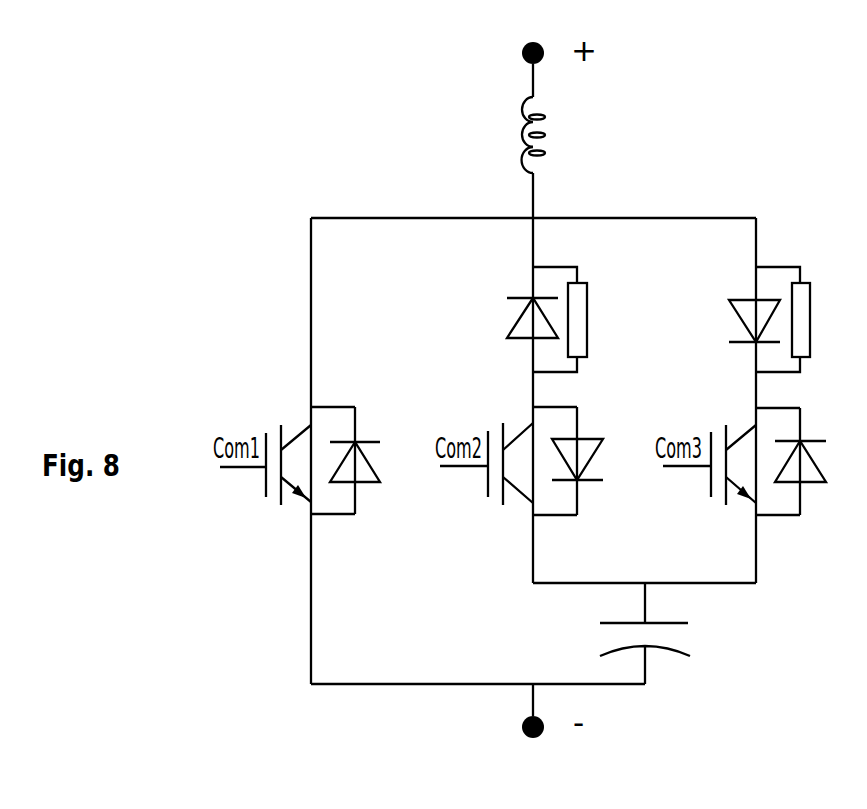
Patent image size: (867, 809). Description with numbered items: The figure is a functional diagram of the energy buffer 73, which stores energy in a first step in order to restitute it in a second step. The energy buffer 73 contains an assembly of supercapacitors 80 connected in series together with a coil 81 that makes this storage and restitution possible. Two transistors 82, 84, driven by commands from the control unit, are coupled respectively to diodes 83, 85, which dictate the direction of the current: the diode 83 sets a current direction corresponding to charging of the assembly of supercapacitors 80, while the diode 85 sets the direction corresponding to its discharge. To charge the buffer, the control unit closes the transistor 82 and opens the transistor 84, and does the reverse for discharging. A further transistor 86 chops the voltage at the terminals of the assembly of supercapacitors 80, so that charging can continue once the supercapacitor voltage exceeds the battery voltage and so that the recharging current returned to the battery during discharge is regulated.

The energy buffer 73 is at (250, 219).
The assembly of supercapacitors 80 is at (598, 653).
The coil 81 is at (520, 128).
The transistor 82 is at (745, 433).
The diode 83 is at (740, 320).
The transistor 84 is at (518, 434).
The diode 85 is at (520, 320).
The transistor 86 is at (300, 432).